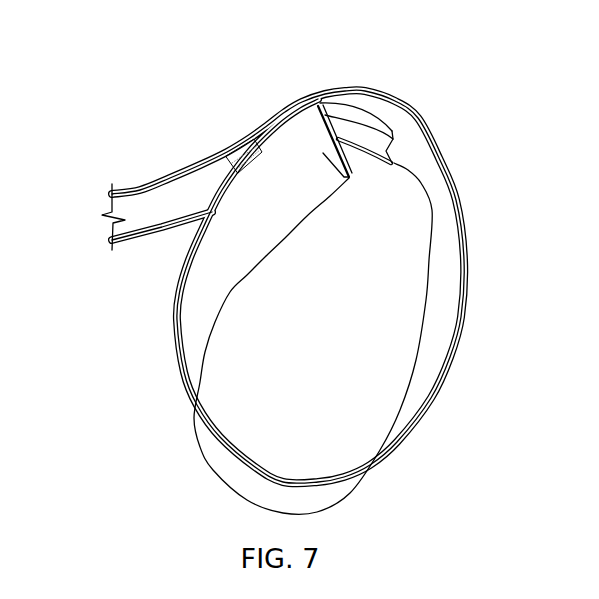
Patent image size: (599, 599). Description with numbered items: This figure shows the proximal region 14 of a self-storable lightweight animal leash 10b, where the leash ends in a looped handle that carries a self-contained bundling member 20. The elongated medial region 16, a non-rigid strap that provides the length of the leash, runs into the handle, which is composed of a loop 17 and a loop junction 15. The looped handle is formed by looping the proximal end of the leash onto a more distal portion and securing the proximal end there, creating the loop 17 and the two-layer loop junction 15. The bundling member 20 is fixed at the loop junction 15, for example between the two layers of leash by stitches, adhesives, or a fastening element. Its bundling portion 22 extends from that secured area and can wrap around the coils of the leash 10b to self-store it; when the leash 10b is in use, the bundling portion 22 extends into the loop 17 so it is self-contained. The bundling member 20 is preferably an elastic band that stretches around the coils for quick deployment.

The self-storable lightweight animal leash 10b is at (137, 89).
The proximal region 14 is at (129, 393).
The loop junction 15 is at (248, 137).
The elongated medial region 16 is at (133, 238).
The loop 17 is at (442, 358).
The bundling member 20 is at (373, 174).
The bundling portion 22 is at (393, 132).